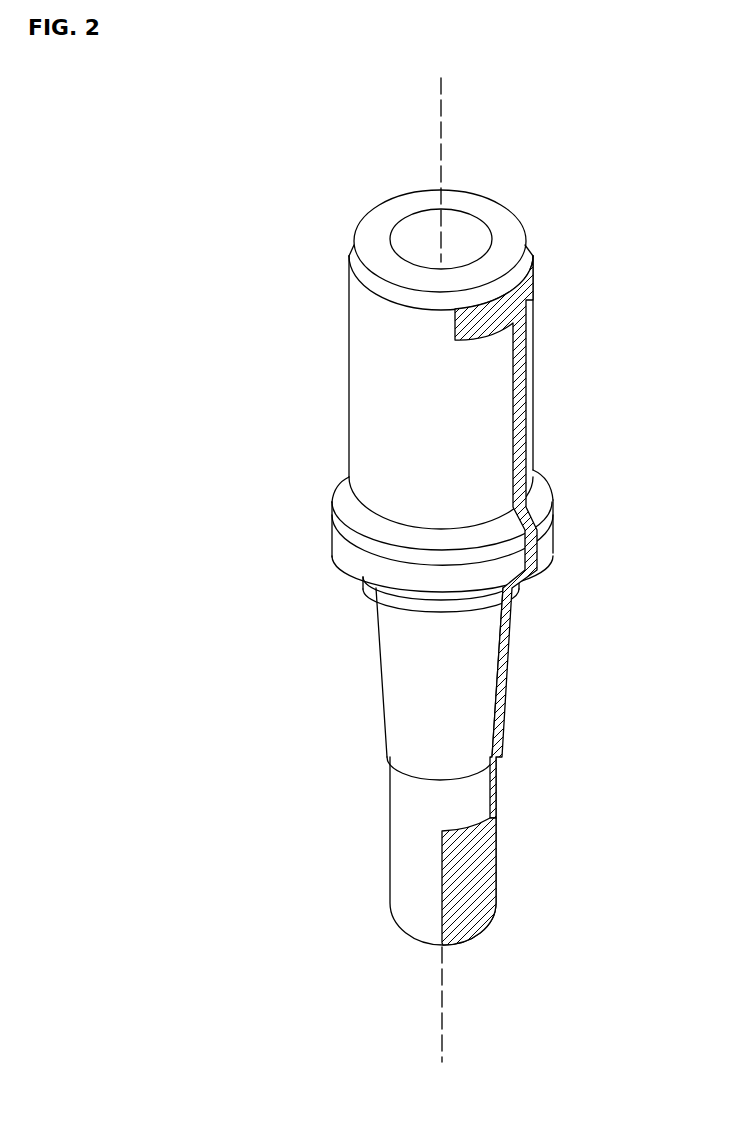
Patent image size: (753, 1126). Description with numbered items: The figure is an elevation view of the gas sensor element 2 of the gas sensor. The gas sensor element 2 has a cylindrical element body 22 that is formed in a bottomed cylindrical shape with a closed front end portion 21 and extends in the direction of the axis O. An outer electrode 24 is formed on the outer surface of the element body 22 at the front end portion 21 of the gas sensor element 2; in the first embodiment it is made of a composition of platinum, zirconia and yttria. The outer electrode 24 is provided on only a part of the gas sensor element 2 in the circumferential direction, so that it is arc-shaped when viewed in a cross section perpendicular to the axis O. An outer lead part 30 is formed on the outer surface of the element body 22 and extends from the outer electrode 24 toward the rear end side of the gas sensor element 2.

The gas sensor element 2 is at (332, 211).
The front end portion 21 is at (428, 930).
The element body 22 is at (398, 647).
The outer electrode 24 is at (480, 873).
The outer lead part 30 is at (510, 618).
The axis O is at (447, 1000).